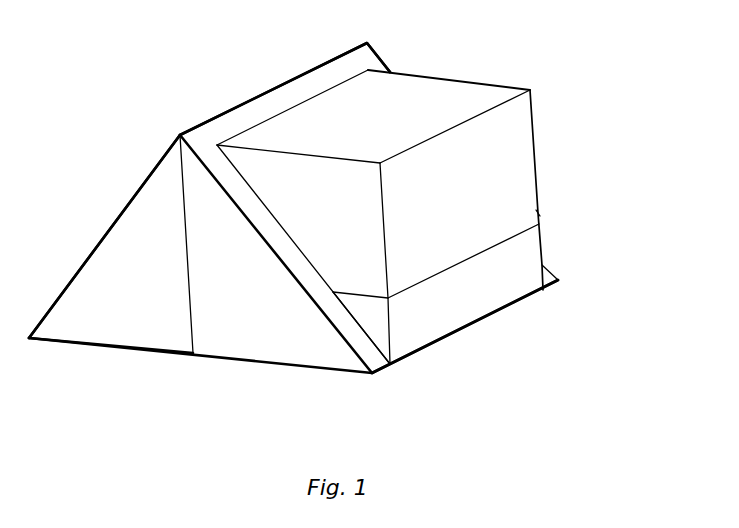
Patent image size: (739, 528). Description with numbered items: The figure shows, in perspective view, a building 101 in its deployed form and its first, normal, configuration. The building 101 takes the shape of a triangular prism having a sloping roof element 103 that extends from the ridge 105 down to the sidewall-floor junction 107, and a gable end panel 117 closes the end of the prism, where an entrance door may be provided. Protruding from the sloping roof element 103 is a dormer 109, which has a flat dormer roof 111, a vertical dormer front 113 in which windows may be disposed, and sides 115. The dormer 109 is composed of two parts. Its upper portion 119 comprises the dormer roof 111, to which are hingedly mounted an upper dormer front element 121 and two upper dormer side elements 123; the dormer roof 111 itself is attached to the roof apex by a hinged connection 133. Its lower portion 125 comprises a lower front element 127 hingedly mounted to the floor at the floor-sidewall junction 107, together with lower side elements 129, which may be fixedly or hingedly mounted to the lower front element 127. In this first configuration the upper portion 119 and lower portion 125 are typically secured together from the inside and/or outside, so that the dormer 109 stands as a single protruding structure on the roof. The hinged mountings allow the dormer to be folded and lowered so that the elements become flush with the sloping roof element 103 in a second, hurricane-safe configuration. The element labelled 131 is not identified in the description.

The building 101 is at (166, 25).
The sloping roof element 103 is at (305, 272).
The ridge 105 is at (264, 93).
The sidewall-floor junction 107 is at (527, 297).
The dormer 109 is at (576, 66).
The dormer roof 111 is at (415, 87).
The dormer front 113 is at (538, 213).
The dormer sides 115 is at (300, 225).
The gable end panel 117 is at (213, 303).
The upper portion of dormer 119 is at (545, 85).
The upper dormer front element 121 is at (447, 245).
The upper dormer side elements 123 is at (260, 163).
The lower portion of dormer 125 is at (562, 219).
The lower front element 127 is at (428, 332).
The lower side elements 129 is at (366, 327).
The top right edge of block 131 is at (495, 100).
The hinged connection 133 is at (334, 82).